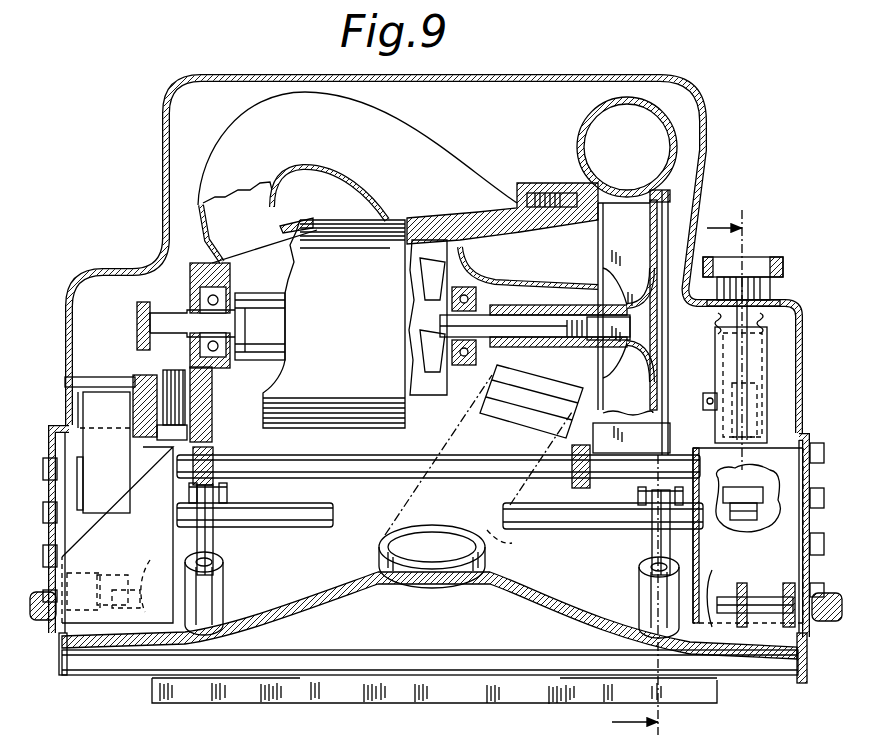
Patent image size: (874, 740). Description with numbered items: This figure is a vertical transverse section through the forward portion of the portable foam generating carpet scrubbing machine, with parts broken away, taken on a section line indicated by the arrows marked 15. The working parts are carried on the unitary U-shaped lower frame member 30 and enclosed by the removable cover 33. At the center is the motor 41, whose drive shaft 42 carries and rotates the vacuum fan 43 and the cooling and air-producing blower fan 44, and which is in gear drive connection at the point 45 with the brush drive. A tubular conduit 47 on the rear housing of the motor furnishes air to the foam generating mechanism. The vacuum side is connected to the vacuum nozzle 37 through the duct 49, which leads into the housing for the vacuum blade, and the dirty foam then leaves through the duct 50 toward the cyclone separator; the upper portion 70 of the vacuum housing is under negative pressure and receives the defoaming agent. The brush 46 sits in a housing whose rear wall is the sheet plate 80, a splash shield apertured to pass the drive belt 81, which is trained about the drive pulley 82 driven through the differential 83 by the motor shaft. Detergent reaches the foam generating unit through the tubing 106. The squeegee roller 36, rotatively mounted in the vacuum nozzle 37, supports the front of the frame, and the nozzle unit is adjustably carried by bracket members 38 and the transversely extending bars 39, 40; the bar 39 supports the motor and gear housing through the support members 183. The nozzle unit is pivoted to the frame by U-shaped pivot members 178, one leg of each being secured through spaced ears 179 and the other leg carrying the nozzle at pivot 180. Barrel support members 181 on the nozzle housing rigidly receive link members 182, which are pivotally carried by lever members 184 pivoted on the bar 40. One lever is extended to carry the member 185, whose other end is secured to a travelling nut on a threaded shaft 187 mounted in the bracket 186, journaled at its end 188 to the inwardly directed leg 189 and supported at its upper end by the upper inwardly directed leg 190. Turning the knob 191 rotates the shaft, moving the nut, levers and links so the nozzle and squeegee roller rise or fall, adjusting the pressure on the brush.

The section line 15 is at (692, 479).
The lower frame member 30 is at (824, 556).
The removable cover 33 is at (705, 152).
The squeegee roller 36 is at (105, 676).
The vacuum nozzle 37 is at (325, 584).
The bracket members 38 is at (124, 557).
The transversely extending bar 39 is at (352, 465).
The transversely extending bar 40 is at (320, 517).
The motor 41 is at (355, 330).
The drive shaft 42 is at (510, 327).
The vacuum fan 43 is at (617, 237).
The blower fan 44 is at (427, 267).
The gear drive connection 45 is at (147, 301).
The brush 46 is at (197, 693).
The tubular conduit 47 is at (437, 187).
The duct 49 is at (512, 543).
The duct 50 is at (578, 126).
The upper portion of the vacuum housing 70 is at (406, 619).
The sheet plate 80 is at (515, 445).
The drive belt 81 is at (105, 452).
The drive pulley 82 is at (78, 383).
The differential 83 is at (157, 353).
The tubing 106 is at (692, 410).
The U-shaped pivot members 178 is at (436, 588).
The spaced ears 179 is at (62, 577).
The pivot 180 is at (102, 572).
The barrel support members 181 is at (223, 575).
The link members 182 is at (210, 550).
The support members 183 is at (207, 443).
The lever member 184 is at (222, 490).
The member 185 is at (717, 428).
The bracket 186 is at (760, 353).
The threaded shaft 187 is at (720, 323).
The journaled end 188 is at (760, 482).
The inwardly directed leg 189 is at (758, 515).
The upper inwardly directed leg 190 is at (767, 333).
The knob 191 is at (780, 263).